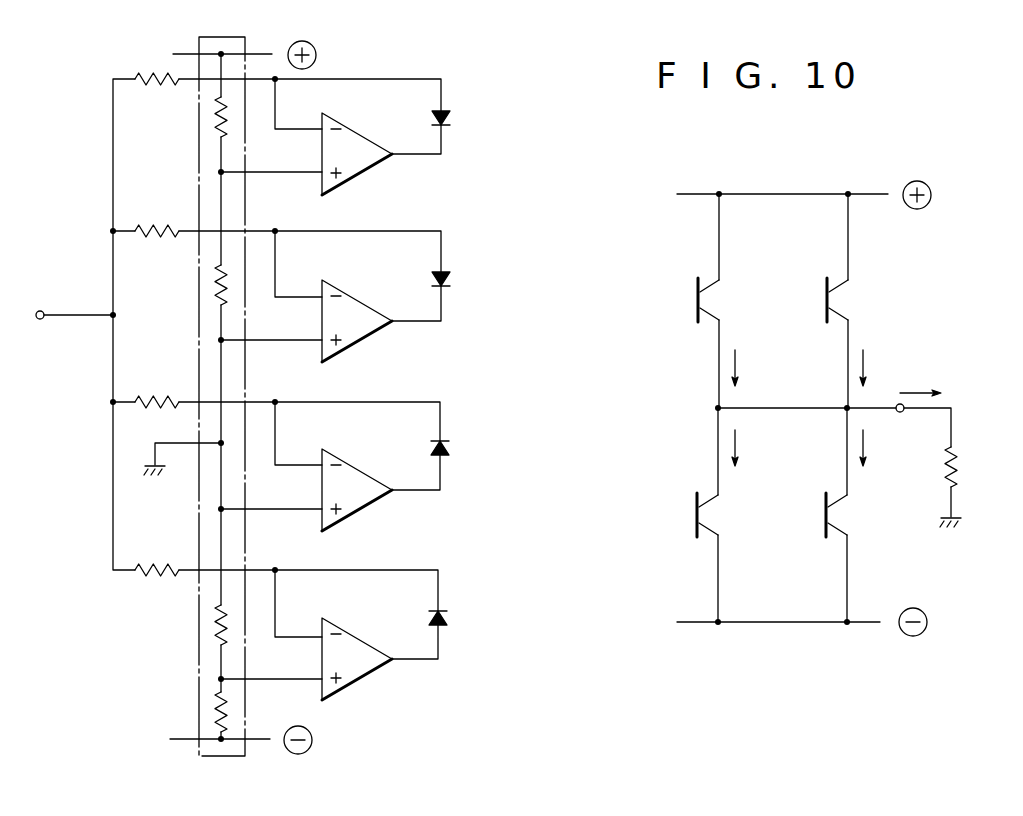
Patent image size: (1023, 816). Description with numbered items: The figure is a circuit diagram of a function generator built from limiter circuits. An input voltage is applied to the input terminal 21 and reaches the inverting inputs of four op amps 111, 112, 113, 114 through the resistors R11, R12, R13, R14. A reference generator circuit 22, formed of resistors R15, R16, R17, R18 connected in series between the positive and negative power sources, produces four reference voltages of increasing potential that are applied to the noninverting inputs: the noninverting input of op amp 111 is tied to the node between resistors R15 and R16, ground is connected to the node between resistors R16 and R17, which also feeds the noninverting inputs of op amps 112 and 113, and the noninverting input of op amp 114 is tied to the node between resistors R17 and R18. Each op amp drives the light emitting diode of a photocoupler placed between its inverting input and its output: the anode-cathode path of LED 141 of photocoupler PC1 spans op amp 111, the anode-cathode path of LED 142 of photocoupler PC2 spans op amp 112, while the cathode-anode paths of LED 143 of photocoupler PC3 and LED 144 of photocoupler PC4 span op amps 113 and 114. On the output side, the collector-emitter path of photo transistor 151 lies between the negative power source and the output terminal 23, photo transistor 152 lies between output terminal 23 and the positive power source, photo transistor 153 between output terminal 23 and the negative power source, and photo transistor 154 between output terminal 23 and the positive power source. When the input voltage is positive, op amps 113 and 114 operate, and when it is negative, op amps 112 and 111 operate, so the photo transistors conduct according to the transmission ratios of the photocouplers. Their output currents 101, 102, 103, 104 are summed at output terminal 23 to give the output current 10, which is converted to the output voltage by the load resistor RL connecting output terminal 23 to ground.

The input terminal 21 is at (41, 313).
The reference generator circuit 22 is at (199, 41).
The resistor R11 is at (146, 565).
The resistor R12 is at (149, 397).
The resistor R13 is at (149, 227).
The resistor R14 is at (154, 85).
The resistor R15 is at (211, 705).
The resistor R16 is at (211, 619).
The resistor R17 is at (213, 291).
The resistor R18 is at (216, 133).
The op amp 111 is at (349, 638).
The op amp 112 is at (349, 459).
The op amp 113 is at (349, 290).
The op amp 114 is at (351, 132).
The LED 141 is at (424, 619).
The LED 142 is at (428, 449).
The LED 143 is at (429, 279).
The LED 144 is at (431, 120).
The photocoupler PC1 is at (491, 607).
The photocoupler PC2 is at (493, 437).
The photocoupler PC3 is at (495, 267).
The photocoupler PC4 is at (495, 107).
The photo transistor 151 is at (682, 504).
The photo transistor 152 is at (684, 277).
The photo transistor 153 is at (811, 504).
The photo transistor 154 is at (813, 277).
The output current 101 is at (754, 446).
The output current 102 is at (754, 366).
The output current 103 is at (882, 446).
The output current 104 is at (882, 366).
The output current 10 is at (920, 379).
The output terminal 23 is at (903, 412).
The load resistor RL is at (960, 472).